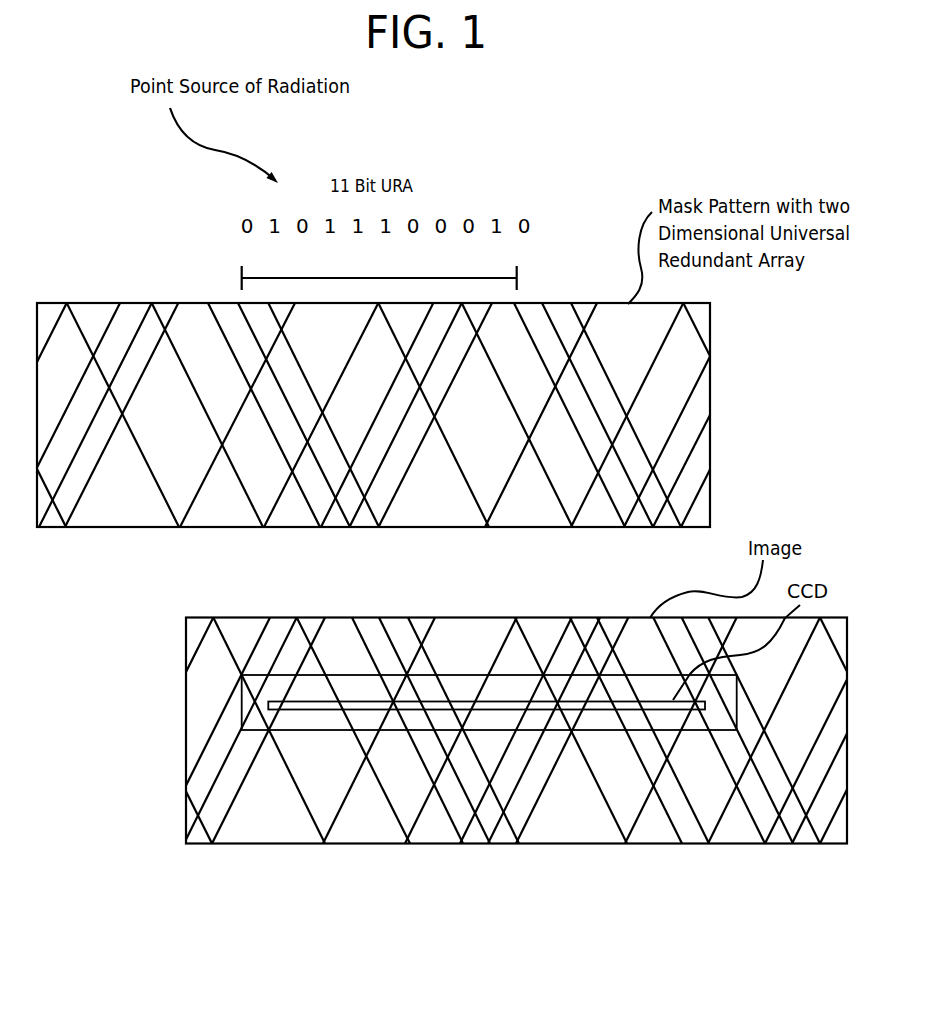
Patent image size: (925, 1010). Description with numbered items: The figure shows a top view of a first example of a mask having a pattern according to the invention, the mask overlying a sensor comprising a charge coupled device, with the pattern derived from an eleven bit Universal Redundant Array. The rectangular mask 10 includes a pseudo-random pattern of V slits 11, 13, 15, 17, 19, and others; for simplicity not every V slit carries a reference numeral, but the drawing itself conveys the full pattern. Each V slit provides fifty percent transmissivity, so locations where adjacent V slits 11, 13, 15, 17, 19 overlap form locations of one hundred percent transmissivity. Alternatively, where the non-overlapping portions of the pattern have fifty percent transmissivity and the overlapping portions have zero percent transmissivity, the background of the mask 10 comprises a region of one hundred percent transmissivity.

The rectangular mask 10 is at (157, 740).
The V slit 11 is at (332, 818).
The V slit 13 is at (415, 823).
The V slit 15 is at (223, 822).
The V slit 17 is at (442, 832).
The V slit 19 is at (465, 793).